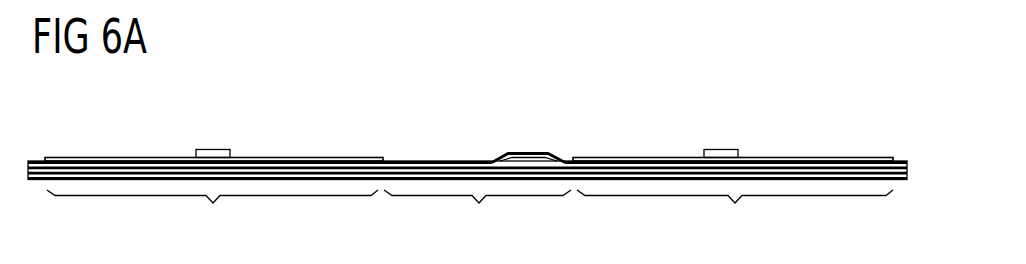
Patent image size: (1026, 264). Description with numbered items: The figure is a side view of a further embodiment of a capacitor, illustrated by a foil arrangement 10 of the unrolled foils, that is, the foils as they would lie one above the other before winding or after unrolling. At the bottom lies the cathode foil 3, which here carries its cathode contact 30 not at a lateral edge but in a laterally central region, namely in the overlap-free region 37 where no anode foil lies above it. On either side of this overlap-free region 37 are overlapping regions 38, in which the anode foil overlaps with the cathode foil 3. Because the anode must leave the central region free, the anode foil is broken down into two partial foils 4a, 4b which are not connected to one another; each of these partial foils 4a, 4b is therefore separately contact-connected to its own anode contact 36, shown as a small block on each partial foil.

The foil arrangement 10 is at (833, 90).
The cathode foil 3 is at (310, 173).
The partial foil 4a is at (100, 158).
The partial foil 4b is at (800, 158).
The cathode contact 30 is at (530, 159).
The anode contact 36 is at (213, 154).
The overlap-free region 37 is at (477, 216).
The overlapping regions 38 is at (470, 216).